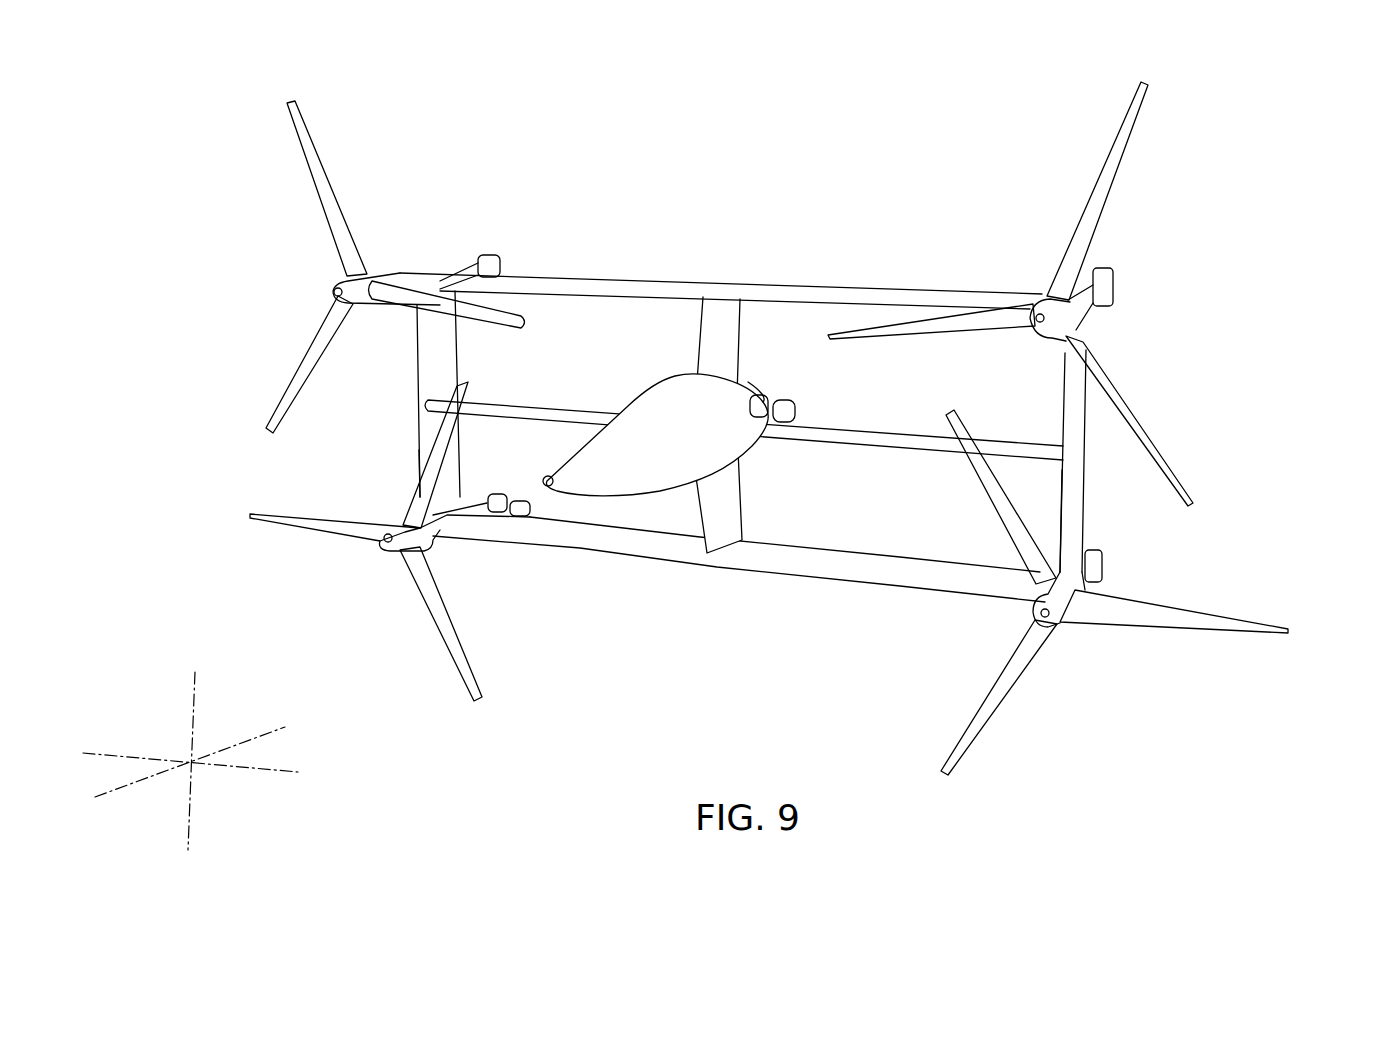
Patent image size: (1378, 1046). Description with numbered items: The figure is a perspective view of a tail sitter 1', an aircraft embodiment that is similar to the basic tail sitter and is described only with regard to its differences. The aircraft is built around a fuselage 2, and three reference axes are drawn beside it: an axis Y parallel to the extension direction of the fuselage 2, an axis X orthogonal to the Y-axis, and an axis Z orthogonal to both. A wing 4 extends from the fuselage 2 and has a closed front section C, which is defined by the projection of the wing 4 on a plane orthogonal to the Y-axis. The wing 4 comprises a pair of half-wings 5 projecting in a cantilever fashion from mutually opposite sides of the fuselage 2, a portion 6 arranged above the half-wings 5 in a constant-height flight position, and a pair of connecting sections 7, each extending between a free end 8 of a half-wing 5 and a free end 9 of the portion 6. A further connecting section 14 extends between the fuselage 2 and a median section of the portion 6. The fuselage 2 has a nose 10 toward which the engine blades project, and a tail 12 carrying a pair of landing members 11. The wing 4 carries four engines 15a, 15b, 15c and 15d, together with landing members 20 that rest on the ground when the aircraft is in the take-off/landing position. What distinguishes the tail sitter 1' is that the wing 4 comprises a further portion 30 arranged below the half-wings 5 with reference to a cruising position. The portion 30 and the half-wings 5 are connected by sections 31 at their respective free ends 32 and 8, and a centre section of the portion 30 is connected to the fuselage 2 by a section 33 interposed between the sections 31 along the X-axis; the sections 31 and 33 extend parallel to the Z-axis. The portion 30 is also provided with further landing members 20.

The tail sitter 1' is at (814, 419).
The fuselage 2 is at (670, 475).
The wing 4 is at (739, 593).
The half-wings 5 is at (545, 405).
The portion 6 is at (795, 298).
The connecting sections 7 is at (770, 431).
The free ends of the half-wings 8 is at (414, 402).
The free ends of portion 9 is at (727, 434).
The nose 10 is at (573, 482).
The landing members 11 is at (787, 398).
The tail 12 is at (733, 430).
The further connecting section 14 is at (736, 350).
The engine 15a is at (341, 573).
The engine 15b is at (1068, 680).
The engine 15c is at (381, 185).
The engine 15d is at (1162, 182).
The landing members 20 is at (487, 254).
The further portion 30 is at (777, 578).
The sections 31 is at (458, 480).
The free ends of portion 32 is at (461, 502).
The section 33 is at (720, 512).
The closed front section C is at (721, 245).
The axis X is at (95, 752).
The axis Y is at (273, 720).
The axis Z is at (190, 680).